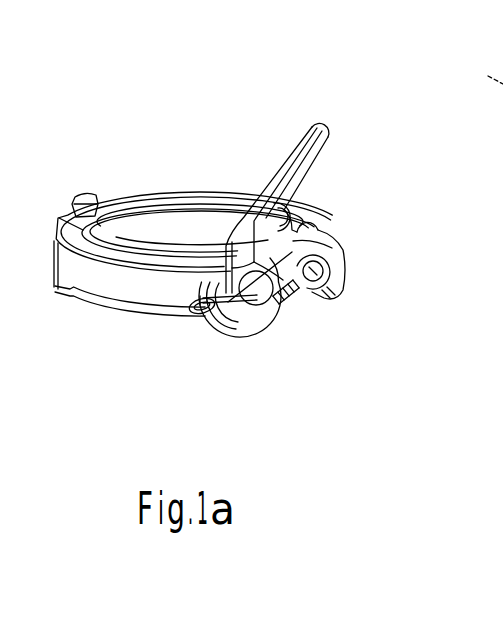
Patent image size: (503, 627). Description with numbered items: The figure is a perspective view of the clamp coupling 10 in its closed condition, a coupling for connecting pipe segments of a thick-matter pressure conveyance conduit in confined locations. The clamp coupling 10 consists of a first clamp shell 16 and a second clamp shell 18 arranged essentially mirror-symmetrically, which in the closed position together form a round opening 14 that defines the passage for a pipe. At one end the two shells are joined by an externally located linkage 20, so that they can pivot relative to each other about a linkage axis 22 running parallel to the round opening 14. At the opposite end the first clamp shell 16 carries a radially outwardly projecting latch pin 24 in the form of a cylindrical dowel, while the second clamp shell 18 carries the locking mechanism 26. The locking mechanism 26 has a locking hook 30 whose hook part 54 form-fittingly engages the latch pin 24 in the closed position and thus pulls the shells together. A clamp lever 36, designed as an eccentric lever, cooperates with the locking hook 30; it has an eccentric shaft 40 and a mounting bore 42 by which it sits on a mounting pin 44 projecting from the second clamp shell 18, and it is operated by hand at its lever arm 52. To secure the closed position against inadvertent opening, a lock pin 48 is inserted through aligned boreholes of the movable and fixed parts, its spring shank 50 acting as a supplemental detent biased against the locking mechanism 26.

The clamp coupling 10 is at (267, 256).
The round opening 14 is at (205, 224).
The first clamp shell 16 is at (199, 214).
The second clamp shell 18 is at (98, 257).
The linkage 20 is at (73, 193).
The linkage axis 22 is at (488, 76).
The latch pin 24 is at (316, 264).
The locking mechanism 26 is at (282, 327).
The locking hook 30 is at (345, 260).
The clamp lever 36 is at (148, 198).
The eccentric shaft 40 is at (174, 320).
The mounting bore 42 is at (314, 222).
The mounting pin 44 is at (287, 303).
The lock pin 48 is at (195, 325).
The spring shank 50 is at (226, 335).
The lever arm 52 is at (322, 122).
The hook part 54 is at (345, 293).